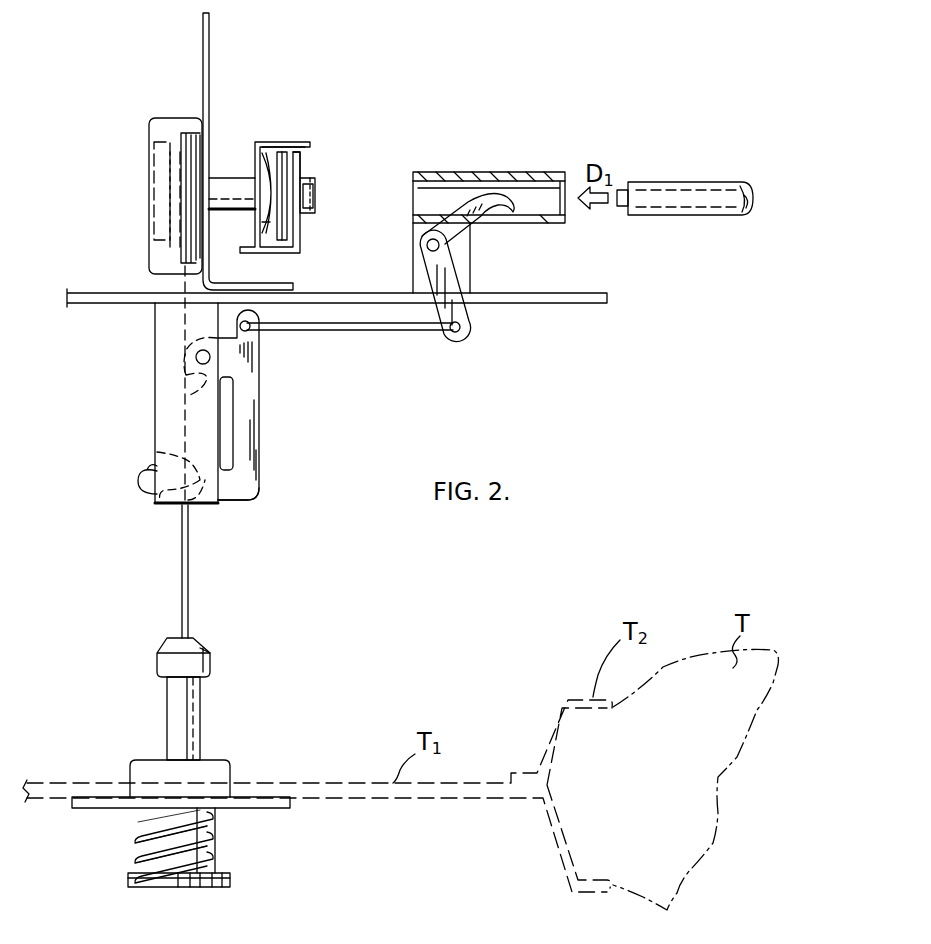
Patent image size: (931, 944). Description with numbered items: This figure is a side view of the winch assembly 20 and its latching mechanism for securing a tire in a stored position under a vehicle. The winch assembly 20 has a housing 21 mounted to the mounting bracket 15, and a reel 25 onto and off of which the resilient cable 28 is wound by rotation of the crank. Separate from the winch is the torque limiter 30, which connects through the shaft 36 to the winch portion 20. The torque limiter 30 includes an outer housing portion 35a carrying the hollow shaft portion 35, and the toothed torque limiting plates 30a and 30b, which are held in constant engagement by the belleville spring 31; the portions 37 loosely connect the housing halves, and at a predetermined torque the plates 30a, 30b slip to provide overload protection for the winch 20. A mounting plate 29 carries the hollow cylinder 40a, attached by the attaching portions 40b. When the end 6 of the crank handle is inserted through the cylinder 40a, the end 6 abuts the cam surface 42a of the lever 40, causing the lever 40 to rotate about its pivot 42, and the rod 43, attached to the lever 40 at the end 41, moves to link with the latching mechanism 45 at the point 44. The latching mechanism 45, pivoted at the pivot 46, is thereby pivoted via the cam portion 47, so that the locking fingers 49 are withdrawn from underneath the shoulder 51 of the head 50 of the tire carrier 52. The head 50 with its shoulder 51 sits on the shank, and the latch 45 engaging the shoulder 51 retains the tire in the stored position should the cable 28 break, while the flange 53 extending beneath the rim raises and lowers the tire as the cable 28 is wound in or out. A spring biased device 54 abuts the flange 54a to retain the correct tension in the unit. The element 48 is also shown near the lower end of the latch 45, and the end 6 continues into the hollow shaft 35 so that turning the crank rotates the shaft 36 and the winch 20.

The mounting bracket 15 is at (203, 37).
The housing 21 is at (150, 118).
The reel 25 is at (190, 135).
The shaft 36 is at (232, 180).
The torque limiter 30 is at (300, 233).
The torque limiting plate 30a is at (268, 150).
The torque limiting plate 30b is at (285, 150).
The belleville spring 31 is at (266, 224).
The hollow shaft portion 35 is at (315, 193).
The outer housing portion 35a is at (303, 170).
The connecting portions 37 is at (300, 143).
The winch assembly 20 is at (145, 272).
The mounting plate 29 is at (607, 298).
The hollow cylinder 40a is at (430, 172).
The attaching portions 40b is at (470, 262).
The pivot 42 is at (427, 246).
The cam surface 42a is at (511, 200).
The lever 40 is at (467, 318).
The end 41 is at (445, 336).
The rod 43 is at (372, 331).
The end of crank handle 6 is at (640, 185).
The cam portion 47 is at (210, 377).
The resilient cable 28 is at (189, 576).
The pivot 46 is at (197, 360).
The latching mechanism 45 is at (258, 398).
The end 44 is at (250, 330).
The lever bottom 48 is at (240, 495).
The locking fingers 49 is at (145, 488).
The head 50 is at (200, 660).
The shoulder 51 is at (208, 677).
The flange 54a is at (175, 722).
The tire carrier 52 is at (222, 768).
The flange 53 is at (288, 806).
The spring biased device 54 is at (142, 845).